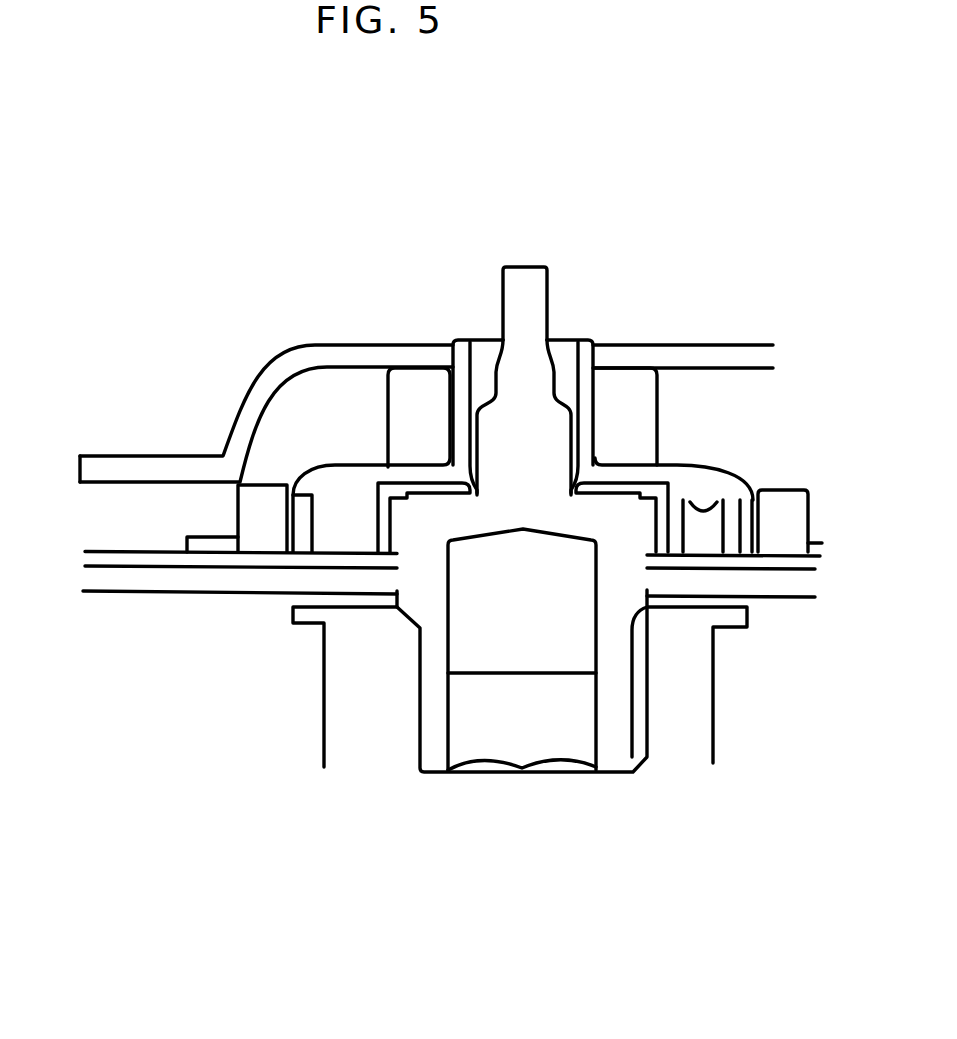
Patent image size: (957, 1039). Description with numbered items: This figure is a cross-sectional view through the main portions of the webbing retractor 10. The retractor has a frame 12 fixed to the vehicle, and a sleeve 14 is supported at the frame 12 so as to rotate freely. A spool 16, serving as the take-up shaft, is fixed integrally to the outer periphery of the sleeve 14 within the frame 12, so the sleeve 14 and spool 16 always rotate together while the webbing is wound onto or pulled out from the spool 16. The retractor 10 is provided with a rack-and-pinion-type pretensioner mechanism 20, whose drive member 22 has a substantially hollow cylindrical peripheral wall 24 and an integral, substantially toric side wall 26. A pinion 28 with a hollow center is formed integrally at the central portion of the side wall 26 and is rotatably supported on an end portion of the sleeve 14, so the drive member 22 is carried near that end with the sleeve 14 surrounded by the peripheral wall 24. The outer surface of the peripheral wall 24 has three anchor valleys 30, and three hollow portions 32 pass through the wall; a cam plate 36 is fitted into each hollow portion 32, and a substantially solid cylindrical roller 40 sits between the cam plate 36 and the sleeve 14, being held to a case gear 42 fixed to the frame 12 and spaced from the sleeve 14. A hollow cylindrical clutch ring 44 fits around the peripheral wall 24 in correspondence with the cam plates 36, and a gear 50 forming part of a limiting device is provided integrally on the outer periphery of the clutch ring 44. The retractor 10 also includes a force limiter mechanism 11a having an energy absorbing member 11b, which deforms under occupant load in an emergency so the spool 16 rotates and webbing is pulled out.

The webbing retractor 10 is at (419, 176).
The force limiter mechanism 11a is at (468, 824).
The energy absorbing member 11b is at (553, 733).
The frame 12 is at (120, 560).
The sleeve 14 is at (376, 507).
The spool 16 is at (714, 698).
The pretensioner mechanism 20 is at (692, 330).
The drive member 22 is at (718, 460).
The peripheral wall 24 is at (337, 530).
The side wall 26 is at (677, 463).
The pinion 28 is at (658, 393).
The anchor valley 30 is at (307, 523).
The hollow portion 32 is at (702, 510).
The cam plate 36 is at (728, 537).
The roller 40 is at (698, 535).
The case gear 42 is at (160, 551).
The clutch ring 44 is at (237, 497).
The gear 50 is at (208, 548).